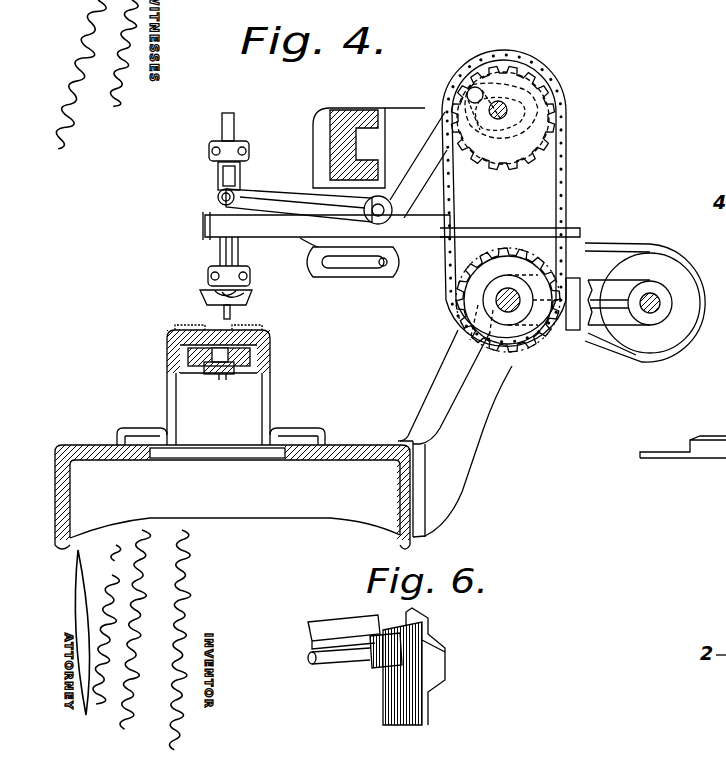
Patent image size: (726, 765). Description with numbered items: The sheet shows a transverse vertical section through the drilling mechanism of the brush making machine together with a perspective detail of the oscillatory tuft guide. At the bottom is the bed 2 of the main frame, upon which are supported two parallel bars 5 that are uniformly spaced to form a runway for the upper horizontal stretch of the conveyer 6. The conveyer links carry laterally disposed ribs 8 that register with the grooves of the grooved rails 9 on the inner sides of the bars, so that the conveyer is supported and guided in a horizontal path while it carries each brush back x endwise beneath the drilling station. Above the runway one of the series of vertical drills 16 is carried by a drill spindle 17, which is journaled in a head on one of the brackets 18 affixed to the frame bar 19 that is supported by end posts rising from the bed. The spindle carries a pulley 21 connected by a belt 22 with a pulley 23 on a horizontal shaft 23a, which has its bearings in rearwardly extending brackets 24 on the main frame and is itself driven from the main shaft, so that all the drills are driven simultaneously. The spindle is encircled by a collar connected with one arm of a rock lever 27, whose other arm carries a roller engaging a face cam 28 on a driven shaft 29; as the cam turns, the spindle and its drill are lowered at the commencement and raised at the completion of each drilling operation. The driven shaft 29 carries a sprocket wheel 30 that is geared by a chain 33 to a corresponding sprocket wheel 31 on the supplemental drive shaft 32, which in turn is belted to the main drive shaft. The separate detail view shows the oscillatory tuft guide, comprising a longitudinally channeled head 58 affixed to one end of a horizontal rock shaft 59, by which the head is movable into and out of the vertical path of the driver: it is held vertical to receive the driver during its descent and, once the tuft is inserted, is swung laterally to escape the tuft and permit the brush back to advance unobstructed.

In FIG. 4, the bed 2 is at (232, 488).
In FIG. 4, the bars 5 is at (168, 340).
In FIG. 4, the conveyer 6 is at (221, 378).
In FIG. 4, the ribs 8 is at (262, 357).
In FIG. 4, the grooved rails 9 is at (262, 372).
In FIG. 4, the vertical drills 16 is at (209, 300).
In FIG. 4, the drill spindles 17 is at (219, 249).
In FIG. 4, the brackets 18 is at (240, 172).
In FIG. 4, the frame bar 19 is at (347, 108).
In FIG. 4, the pulley 21 is at (206, 216).
In FIG. 4, the belt 22 is at (481, 238).
In FIG. 4, the pulley 23 is at (660, 265).
In FIG. 4, the horizontal shaft 23a is at (650, 313).
In FIG. 4, the brackets 24 is at (487, 397).
In FIG. 4, the rock lever 27 is at (287, 197).
In FIG. 4, the face cam 28 is at (536, 96).
In FIG. 4, the driven shaft 29 is at (507, 112).
In FIG. 4, the sprocket wheel 30 is at (512, 68).
In FIG. 4, the sprocket wheel 31 is at (462, 310).
In FIG. 4, the supplemental drive shaft 32 is at (496, 300).
In FIG. 4, the chain 33 is at (567, 161).
In FIG. 4, the brush back x is at (238, 324).
In FIG. 6, the channeled head 58 is at (430, 687).
In FIG. 6, the rock shaft 59 is at (328, 664).